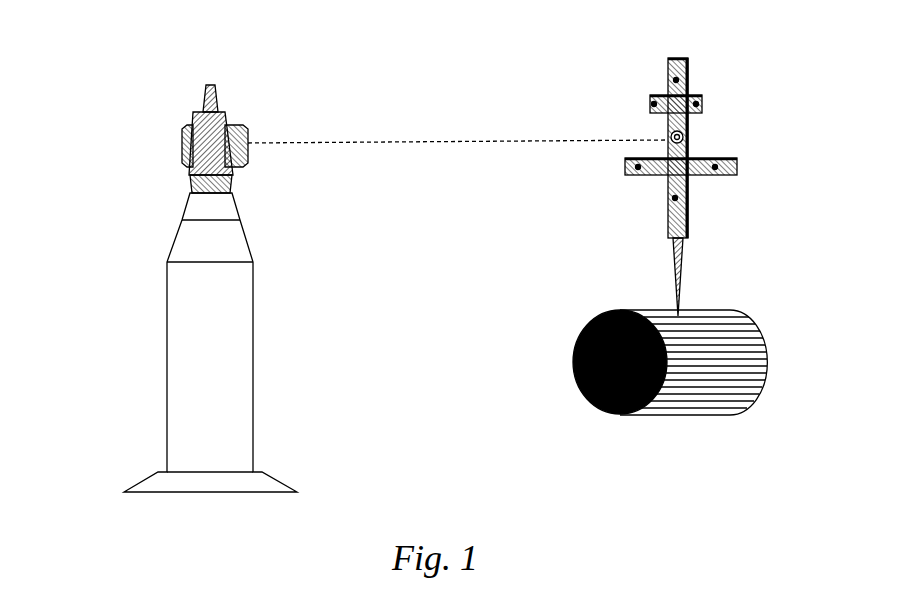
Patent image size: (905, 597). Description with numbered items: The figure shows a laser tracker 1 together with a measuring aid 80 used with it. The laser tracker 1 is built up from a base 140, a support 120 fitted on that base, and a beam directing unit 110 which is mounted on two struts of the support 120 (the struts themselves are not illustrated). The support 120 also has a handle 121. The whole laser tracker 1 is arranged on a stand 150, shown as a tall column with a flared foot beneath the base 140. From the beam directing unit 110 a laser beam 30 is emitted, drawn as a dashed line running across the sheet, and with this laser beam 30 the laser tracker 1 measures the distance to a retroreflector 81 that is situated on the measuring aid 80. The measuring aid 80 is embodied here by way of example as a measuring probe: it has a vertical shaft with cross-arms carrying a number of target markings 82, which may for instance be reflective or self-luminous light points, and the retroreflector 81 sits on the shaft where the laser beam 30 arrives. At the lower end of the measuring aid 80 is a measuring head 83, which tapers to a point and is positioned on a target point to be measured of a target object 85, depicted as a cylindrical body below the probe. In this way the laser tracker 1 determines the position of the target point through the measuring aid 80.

The laser tracker 1 is at (140, 46).
The laser beam 30 is at (458, 124).
The measuring aid 80 is at (655, 122).
The retroreflector 81 is at (712, 134).
The target markings 82 is at (671, 135).
The measuring head 83 is at (707, 277).
The target object 85 is at (628, 332).
The beam directing unit 110 is at (181, 131).
The support 120 is at (249, 119).
The handle 121 is at (256, 69).
The base 140 is at (163, 180).
The stand 150 is at (167, 342).